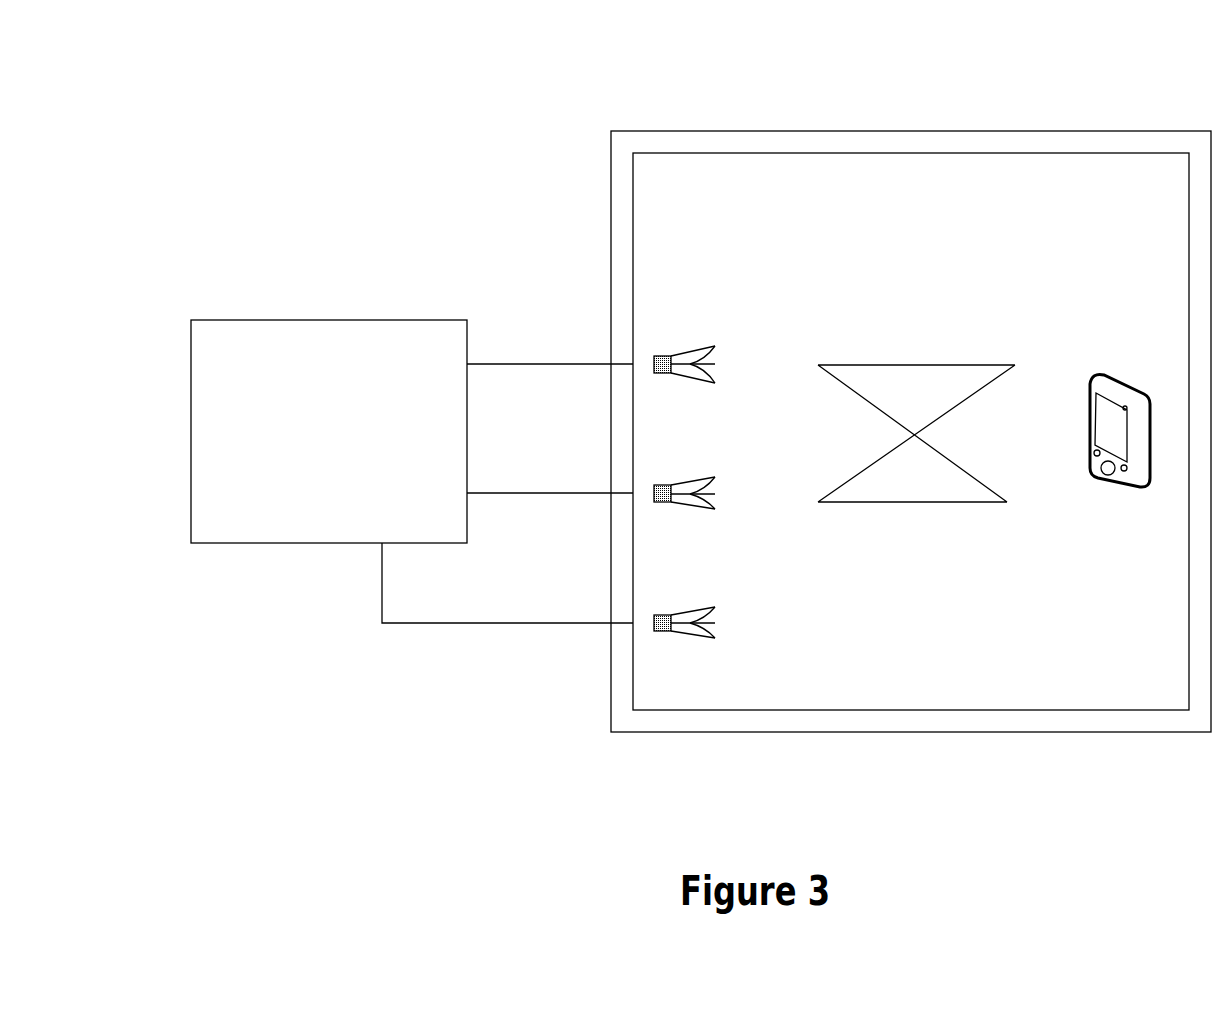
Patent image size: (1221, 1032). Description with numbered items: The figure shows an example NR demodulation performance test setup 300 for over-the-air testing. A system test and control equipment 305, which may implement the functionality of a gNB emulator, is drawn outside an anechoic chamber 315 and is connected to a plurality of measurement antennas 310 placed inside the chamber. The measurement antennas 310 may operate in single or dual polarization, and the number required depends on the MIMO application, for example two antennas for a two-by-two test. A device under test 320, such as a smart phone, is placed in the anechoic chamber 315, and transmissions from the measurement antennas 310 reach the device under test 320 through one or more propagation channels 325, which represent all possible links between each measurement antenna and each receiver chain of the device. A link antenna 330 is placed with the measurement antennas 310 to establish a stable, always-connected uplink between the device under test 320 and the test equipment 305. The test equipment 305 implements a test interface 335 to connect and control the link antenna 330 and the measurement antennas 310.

The NR demodulation performance test setup 300 is at (500, 73).
The system test and control equipment 305 is at (329, 431).
The measurement antennas 310 is at (725, 386).
The anechoic chamber 315 is at (911, 414).
The device under test 320 is at (1104, 415).
The propagation channels 325 is at (925, 466).
The link antenna 330 is at (734, 648).
The test interface 335 is at (507, 523).